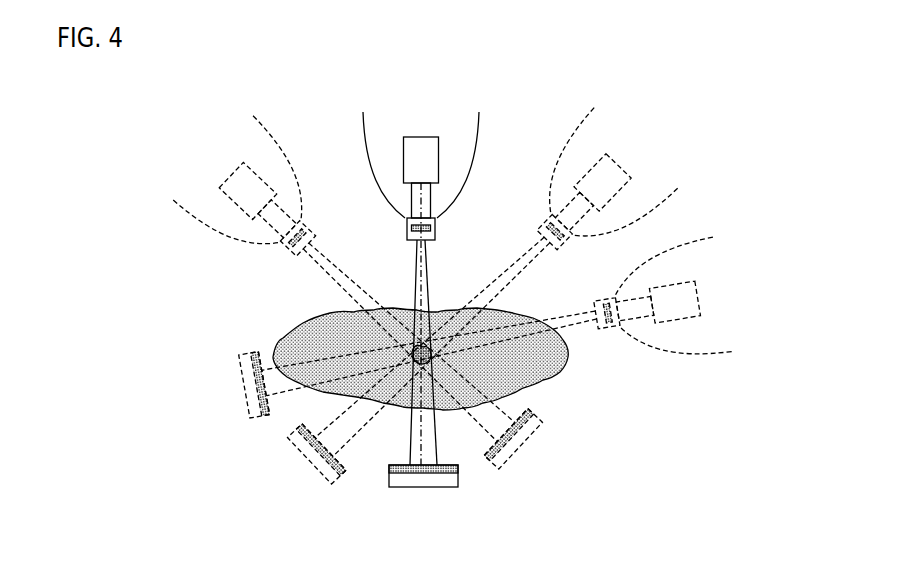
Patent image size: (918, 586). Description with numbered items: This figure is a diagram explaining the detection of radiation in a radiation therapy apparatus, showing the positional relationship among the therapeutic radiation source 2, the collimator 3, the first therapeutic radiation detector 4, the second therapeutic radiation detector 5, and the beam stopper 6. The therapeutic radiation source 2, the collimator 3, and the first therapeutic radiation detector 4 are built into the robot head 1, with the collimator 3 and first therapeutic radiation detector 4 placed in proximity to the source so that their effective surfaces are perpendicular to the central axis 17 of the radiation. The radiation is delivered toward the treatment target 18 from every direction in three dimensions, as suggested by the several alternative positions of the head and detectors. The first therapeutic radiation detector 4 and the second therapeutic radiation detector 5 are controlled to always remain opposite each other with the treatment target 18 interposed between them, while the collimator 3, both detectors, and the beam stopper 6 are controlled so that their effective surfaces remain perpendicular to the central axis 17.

The robot head 1 is at (475, 130).
The therapeutic radiation source 2 is at (422, 138).
The collimator 3 is at (432, 203).
The first therapeutic radiation detector 4 is at (434, 228).
The second therapeutic radiation detector 5 is at (457, 468).
The beam stopper 6 is at (430, 480).
The central axis 17 is at (428, 292).
The treatment target 18 is at (413, 342).